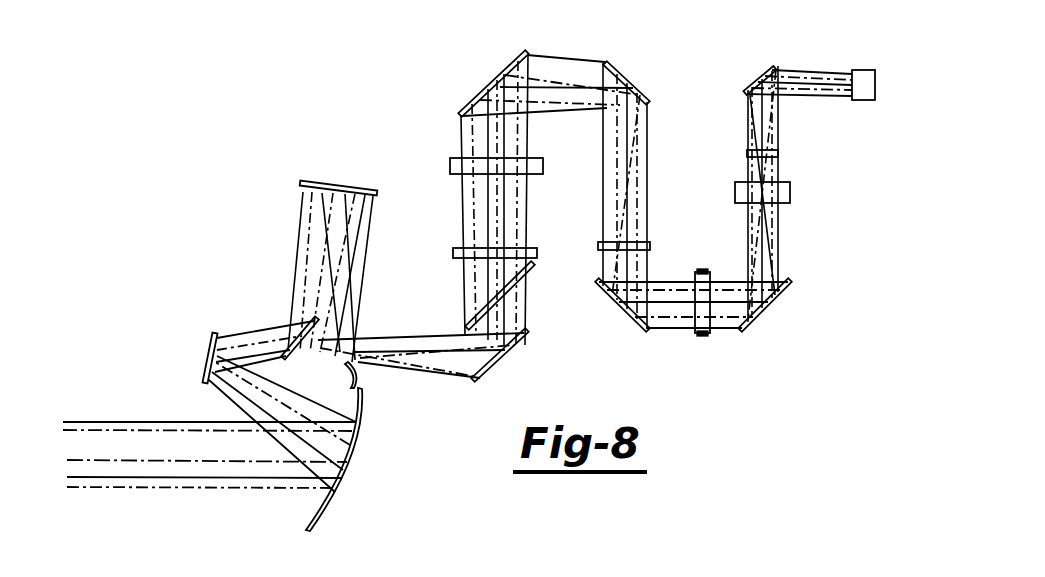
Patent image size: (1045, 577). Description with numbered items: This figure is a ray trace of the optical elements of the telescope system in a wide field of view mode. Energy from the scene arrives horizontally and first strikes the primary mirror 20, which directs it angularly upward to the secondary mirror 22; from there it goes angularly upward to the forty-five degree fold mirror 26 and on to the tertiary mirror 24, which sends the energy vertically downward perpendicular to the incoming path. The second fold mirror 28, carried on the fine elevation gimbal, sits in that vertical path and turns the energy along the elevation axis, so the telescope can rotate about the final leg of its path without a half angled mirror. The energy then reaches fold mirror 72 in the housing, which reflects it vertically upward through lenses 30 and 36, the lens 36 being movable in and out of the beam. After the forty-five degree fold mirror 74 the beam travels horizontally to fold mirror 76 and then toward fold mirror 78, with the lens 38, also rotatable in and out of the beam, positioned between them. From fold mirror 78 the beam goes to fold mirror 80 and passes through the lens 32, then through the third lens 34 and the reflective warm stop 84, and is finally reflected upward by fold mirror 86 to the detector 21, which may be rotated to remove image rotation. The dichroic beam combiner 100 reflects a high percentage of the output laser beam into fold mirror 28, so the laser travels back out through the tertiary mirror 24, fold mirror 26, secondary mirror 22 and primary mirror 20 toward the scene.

The primary mirror 20 is at (328, 498).
The detector 21 is at (862, 70).
The secondary mirror 22 is at (210, 355).
The tertiary mirror 24 is at (333, 178).
The fold mirror 26 is at (300, 343).
The second fold mirror 28 is at (360, 394).
The lens 30 is at (450, 165).
The lens 32 is at (703, 336).
The third lens 34 is at (790, 195).
The lens 36 is at (455, 248).
The lens 38 is at (652, 243).
The fold mirror 72 is at (508, 355).
The fold mirror 74 is at (483, 92).
The fold mirror 76 is at (633, 82).
The fold mirror 78 is at (609, 298).
The fold mirror 80 is at (768, 305).
The reflective warm stop 84 is at (780, 153).
The fold mirror 86 is at (752, 85).
The dichroic beam combiner 100 is at (528, 270).